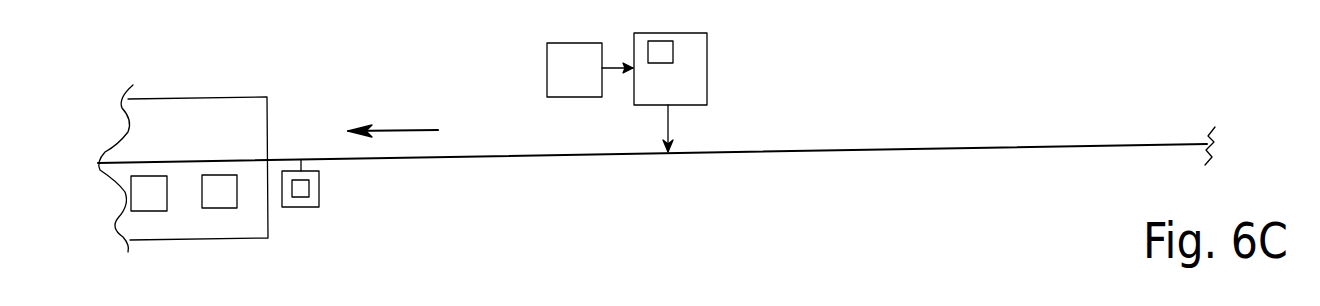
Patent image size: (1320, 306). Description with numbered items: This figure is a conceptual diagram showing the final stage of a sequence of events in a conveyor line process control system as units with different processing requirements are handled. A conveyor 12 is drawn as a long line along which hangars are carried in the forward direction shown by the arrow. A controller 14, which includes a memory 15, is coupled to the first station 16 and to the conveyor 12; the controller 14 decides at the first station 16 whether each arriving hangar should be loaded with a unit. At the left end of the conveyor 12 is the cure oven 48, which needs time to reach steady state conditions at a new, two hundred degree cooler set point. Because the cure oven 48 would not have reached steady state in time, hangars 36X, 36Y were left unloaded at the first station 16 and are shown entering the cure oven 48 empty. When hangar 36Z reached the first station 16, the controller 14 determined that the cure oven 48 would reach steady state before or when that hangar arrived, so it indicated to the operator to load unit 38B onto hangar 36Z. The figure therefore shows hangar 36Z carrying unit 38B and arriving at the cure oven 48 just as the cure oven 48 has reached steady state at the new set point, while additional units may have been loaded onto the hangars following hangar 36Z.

The conveyor 12 is at (898, 147).
The controller 14 is at (697, 65).
The memory 15 is at (657, 50).
The first station 16 is at (545, 75).
The cure oven 48 is at (243, 95).
The hangar 36X is at (152, 210).
The hangar 36Y is at (212, 208).
The hangar 36Z is at (307, 210).
The unit 38B is at (298, 197).